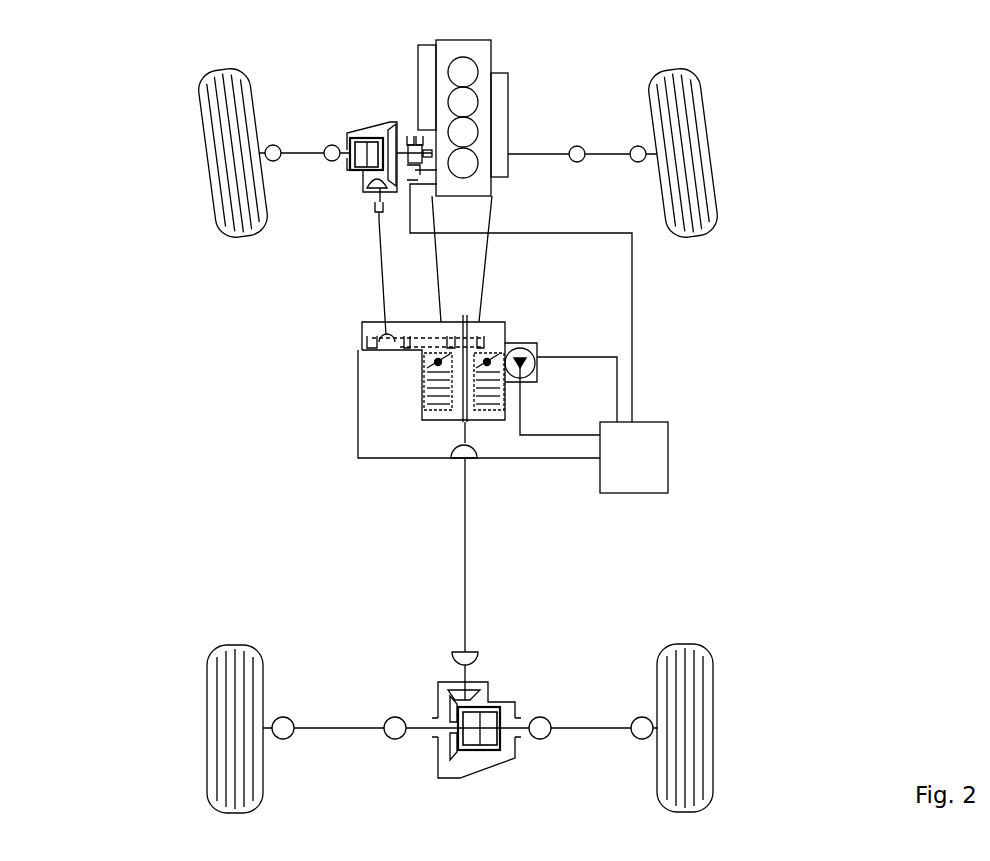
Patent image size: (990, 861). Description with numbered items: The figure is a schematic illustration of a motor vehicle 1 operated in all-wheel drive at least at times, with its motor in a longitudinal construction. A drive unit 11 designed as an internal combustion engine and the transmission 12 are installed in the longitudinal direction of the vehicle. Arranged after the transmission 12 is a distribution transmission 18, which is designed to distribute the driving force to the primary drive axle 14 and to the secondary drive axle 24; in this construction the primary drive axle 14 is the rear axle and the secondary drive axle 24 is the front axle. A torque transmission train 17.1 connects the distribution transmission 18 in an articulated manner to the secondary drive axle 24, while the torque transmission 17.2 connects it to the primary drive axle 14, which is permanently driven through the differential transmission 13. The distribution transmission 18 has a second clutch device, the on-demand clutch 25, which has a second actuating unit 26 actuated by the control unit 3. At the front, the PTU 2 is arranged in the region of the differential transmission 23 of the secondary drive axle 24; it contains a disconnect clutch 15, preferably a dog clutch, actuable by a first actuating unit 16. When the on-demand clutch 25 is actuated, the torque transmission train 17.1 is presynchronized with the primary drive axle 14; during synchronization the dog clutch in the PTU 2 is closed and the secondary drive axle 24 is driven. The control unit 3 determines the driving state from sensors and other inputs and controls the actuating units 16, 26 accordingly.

The motor vehicle 1 is at (221, 502).
The PTU 2 is at (232, 182).
The control unit 3 is at (640, 457).
The drive unit 11 is at (477, 51).
The transmission 12 is at (463, 287).
The differential transmission 13 is at (503, 722).
The primary drive axle 14 is at (622, 728).
The disconnect clutch 15 is at (413, 162).
The first actuating unit 16 is at (425, 180).
The torque transmission train 17.1 is at (382, 268).
The torque transmission 17.2 is at (465, 512).
The distribution transmission 18 is at (657, 325).
The differential transmission 23 is at (357, 162).
The secondary drive axle 24 is at (602, 154).
The on-demand clutch 25 is at (503, 395).
The second actuating unit 26 is at (540, 355).